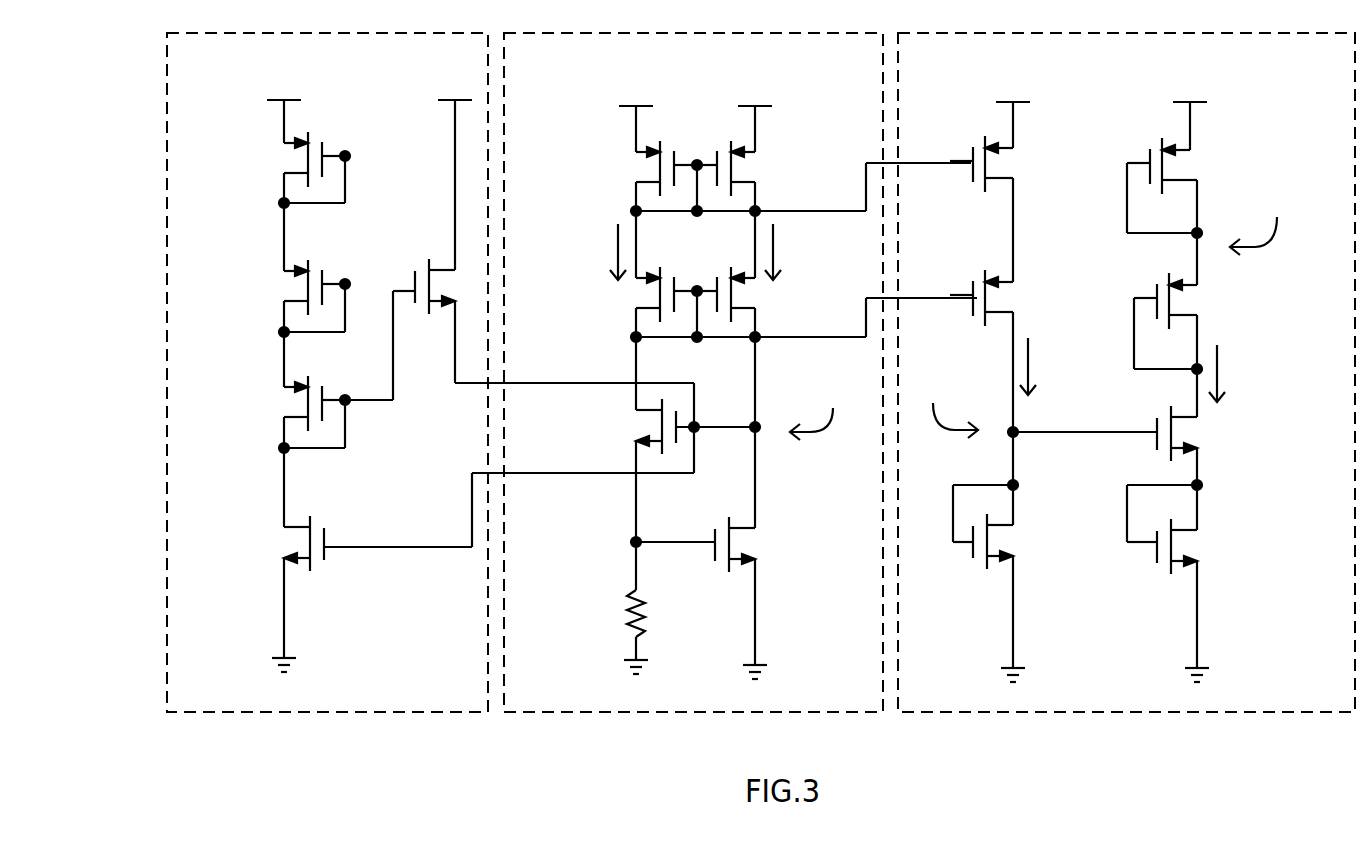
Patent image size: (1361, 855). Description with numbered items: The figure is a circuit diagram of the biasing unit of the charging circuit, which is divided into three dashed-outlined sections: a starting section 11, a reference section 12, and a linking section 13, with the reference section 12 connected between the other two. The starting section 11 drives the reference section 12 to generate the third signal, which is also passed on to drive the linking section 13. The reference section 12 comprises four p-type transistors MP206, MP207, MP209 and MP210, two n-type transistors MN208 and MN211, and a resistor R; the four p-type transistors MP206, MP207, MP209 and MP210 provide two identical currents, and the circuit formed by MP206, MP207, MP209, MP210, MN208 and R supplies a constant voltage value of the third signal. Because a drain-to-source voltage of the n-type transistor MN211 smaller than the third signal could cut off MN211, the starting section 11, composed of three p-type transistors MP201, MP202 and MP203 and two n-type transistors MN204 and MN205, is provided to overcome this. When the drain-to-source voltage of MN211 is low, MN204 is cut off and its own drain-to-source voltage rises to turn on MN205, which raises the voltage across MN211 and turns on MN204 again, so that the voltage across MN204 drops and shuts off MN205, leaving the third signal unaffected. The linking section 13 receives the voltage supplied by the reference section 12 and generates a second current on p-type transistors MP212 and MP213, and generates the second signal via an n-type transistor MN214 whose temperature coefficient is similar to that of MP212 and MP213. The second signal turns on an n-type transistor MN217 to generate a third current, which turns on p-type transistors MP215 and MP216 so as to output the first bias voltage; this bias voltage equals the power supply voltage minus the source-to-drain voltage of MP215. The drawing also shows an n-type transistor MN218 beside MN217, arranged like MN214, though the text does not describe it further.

The starting section 11 is at (279, 713).
The reference section 12 is at (655, 713).
The linking section 13 is at (1060, 713).
The p-type transistor MP201 is at (266, 170).
The p-type transistor MP202 is at (266, 298).
The p-type transistor MP203 is at (288, 372).
The n-type transistor MN204 is at (378, 562).
The n-type transistor MN205 is at (402, 268).
The p-type transistor MP206 is at (610, 170).
The p-type transistor MP207 is at (610, 294).
The n-type transistor MN208 is at (639, 426).
The p-type transistor MP209 is at (776, 174).
The p-type transistor MP210 is at (777, 297).
The n-type transistor MN211 is at (693, 563).
The resistor R is at (617, 613).
The p-type transistor MP212 is at (1033, 164).
The p-type transistor MP213 is at (1034, 294).
The n-type transistor MN214 is at (1035, 527).
The p-type transistor MP215 is at (1216, 169).
The p-type transistor MP216 is at (1219, 321).
The n-type transistor MN217 is at (1160, 433).
The NMOS transistor MN218 is at (1217, 529).